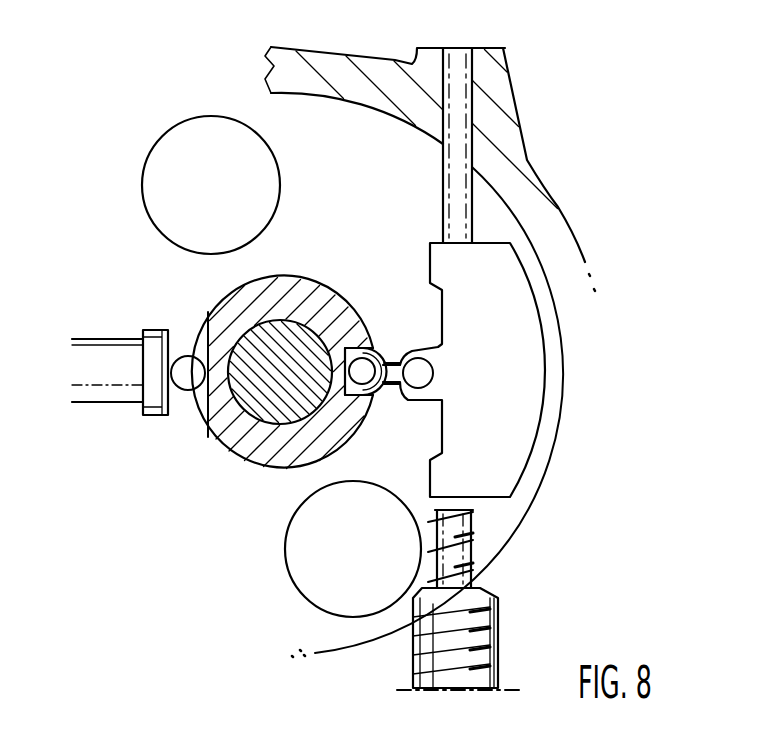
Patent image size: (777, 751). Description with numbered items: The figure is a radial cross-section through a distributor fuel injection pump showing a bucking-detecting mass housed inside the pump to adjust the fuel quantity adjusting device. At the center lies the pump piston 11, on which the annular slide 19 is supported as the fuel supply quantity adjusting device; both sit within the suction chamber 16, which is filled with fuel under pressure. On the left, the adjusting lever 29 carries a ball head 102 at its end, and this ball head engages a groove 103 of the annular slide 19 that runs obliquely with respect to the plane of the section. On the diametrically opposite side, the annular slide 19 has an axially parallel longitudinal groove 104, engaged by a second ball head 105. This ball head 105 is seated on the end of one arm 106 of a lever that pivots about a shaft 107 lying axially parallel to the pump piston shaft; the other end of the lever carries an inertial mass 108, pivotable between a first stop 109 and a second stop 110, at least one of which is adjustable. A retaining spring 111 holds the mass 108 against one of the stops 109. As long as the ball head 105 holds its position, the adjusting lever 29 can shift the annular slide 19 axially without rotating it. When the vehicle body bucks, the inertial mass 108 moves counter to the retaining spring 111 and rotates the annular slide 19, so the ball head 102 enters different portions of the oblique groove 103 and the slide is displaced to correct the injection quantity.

The pump piston 11 is at (265, 398).
The suction chamber 16 is at (337, 147).
The annular slide 19 is at (292, 279).
The adjusting lever 29 is at (160, 375).
The ball head 102 is at (200, 428).
The groove 103 is at (203, 333).
The longitudinal groove 104 is at (350, 400).
The ball head 105 is at (362, 348).
The arm 106 is at (397, 357).
The shaft 107 is at (433, 375).
The inertial mass 108 is at (514, 316).
The first stop 109 is at (453, 212).
The second stop 110 is at (453, 565).
The retaining spring 111 is at (476, 528).